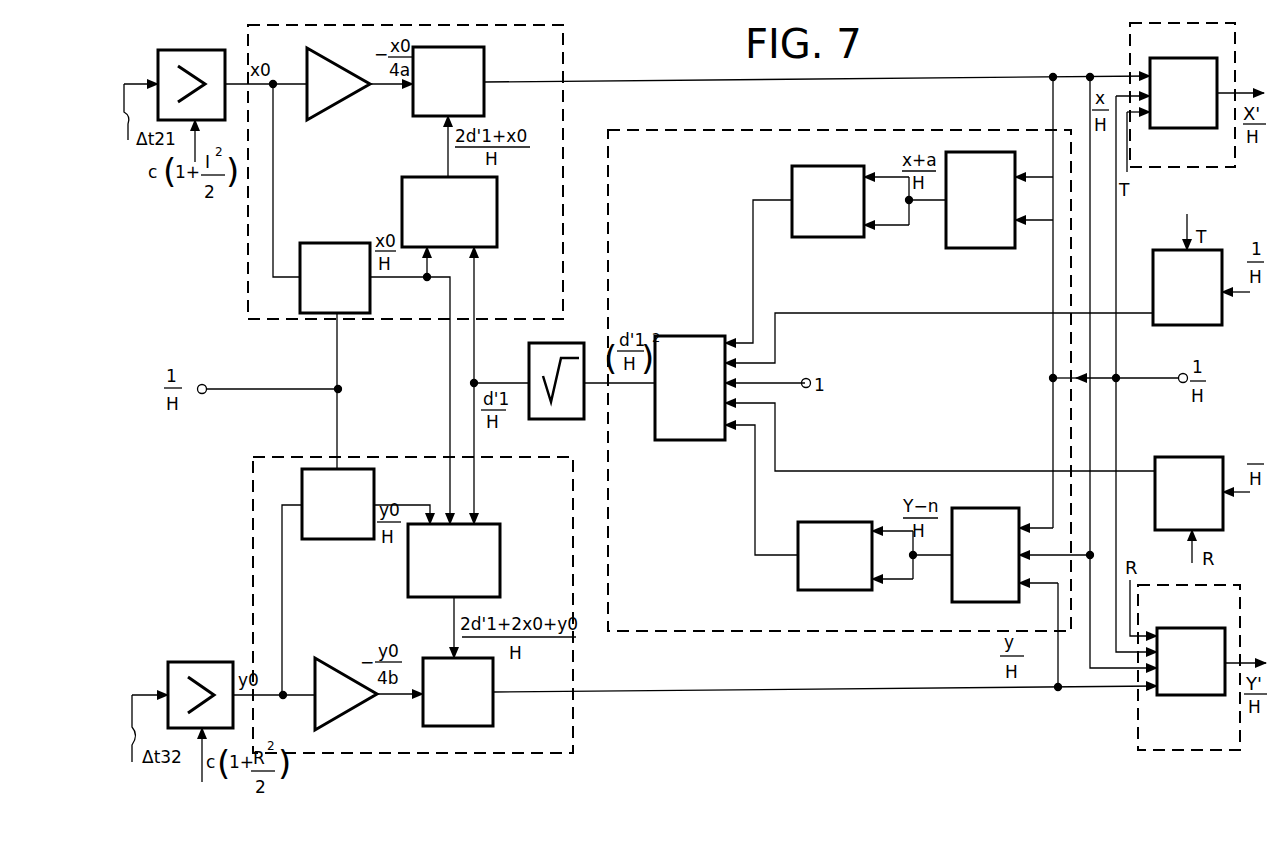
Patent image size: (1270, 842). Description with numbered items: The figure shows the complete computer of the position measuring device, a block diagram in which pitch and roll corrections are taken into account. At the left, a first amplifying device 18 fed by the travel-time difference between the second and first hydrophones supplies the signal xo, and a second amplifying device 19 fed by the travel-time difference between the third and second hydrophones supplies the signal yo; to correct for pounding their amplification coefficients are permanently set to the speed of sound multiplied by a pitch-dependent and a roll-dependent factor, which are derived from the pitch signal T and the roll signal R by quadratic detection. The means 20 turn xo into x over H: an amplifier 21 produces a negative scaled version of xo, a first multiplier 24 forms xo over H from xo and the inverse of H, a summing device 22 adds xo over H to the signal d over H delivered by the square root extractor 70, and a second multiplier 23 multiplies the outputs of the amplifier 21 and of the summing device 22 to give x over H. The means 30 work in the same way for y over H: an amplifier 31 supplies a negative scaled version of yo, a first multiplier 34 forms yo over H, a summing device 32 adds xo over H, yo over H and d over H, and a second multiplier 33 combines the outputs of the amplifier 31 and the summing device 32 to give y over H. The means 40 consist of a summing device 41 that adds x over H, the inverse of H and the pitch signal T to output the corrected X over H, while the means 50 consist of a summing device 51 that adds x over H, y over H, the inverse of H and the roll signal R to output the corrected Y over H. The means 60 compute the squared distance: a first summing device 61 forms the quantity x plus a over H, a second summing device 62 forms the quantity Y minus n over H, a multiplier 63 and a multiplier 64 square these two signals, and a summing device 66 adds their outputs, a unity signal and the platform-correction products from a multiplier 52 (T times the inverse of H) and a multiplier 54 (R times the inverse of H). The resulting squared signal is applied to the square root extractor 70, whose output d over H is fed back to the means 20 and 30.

The first amplifying device 18 is at (172, 78).
The second amplifying device 19 is at (190, 673).
The means for supplying the signal x/H 20 is at (253, 262).
The amplifier 21 is at (318, 96).
The summing device 22 is at (554, 173).
The second multiplier 23 is at (549, 35).
The first multiplier 24 is at (318, 256).
The means for supplying the signal y/H 30 is at (260, 508).
The amplifier 31 is at (333, 683).
The summing device 32 is at (430, 581).
The second multiplier 33 is at (477, 697).
The first multiplier 34 is at (320, 517).
The means for supplying the signal X/H 40 is at (1130, 46).
The summing device 41 is at (1195, 25).
The means for supplying the signal Y/H 50 is at (1150, 707).
The summing device 51 is at (1190, 685).
The multiplier 52 is at (1216, 308).
The multiplier 54 is at (1258, 421).
The means for supplying the signal (d1/H)² 60 is at (670, 630).
The first summing device 61 is at (988, 222).
The second summing device 62 is at (980, 586).
The multiplier 63 is at (801, 214).
The multiplier 64 is at (828, 577).
The summing device 66 is at (683, 352).
The square root extractor 70 is at (541, 377).